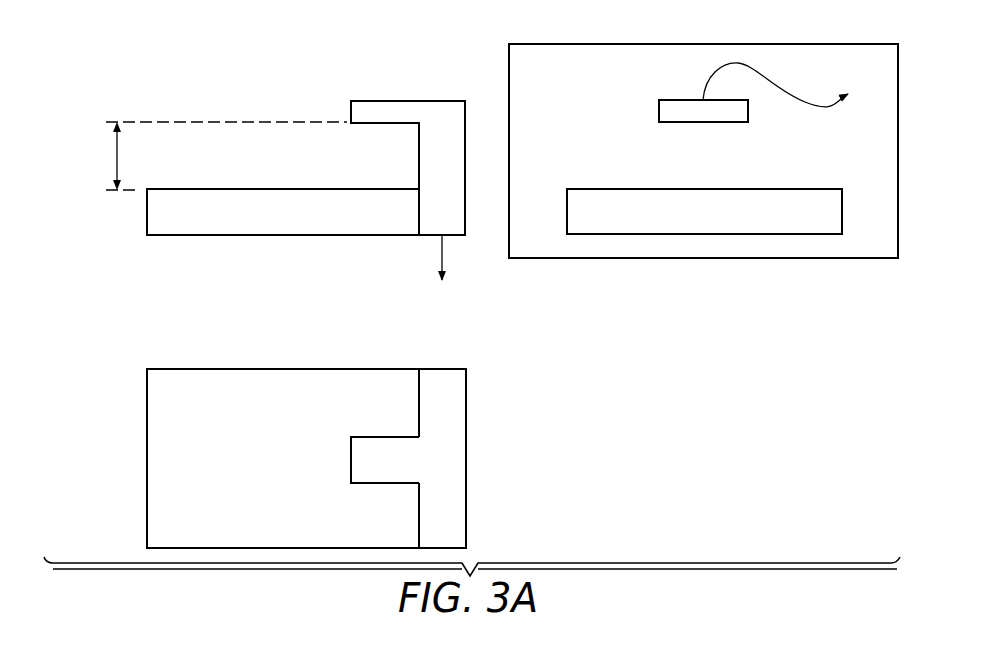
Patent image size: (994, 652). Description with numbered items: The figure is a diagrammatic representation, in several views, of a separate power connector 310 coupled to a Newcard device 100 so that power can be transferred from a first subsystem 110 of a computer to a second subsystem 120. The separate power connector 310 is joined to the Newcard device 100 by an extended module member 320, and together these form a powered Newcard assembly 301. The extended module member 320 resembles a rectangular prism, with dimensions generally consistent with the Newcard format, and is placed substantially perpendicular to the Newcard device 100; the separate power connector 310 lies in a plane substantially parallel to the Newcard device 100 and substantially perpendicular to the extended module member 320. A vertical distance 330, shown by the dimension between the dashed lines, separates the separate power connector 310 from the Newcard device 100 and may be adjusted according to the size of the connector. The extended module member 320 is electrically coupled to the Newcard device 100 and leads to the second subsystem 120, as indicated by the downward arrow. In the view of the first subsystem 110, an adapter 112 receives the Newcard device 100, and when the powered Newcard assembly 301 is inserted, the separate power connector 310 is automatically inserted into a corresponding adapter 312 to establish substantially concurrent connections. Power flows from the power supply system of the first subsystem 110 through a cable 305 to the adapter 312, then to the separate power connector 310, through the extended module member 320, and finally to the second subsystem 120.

The Newcard device 100 is at (145, 212).
The first subsystem 110 is at (785, 259).
The adapter 112 is at (623, 189).
The second subsystem 120 is at (442, 272).
The powered Newcard assembly 301 is at (190, 93).
The cable 305 is at (803, 102).
The separate power connector 310 is at (350, 112).
The adapter 312 is at (659, 110).
The extended module member 320 is at (419, 162).
The vertical distance 330 is at (113, 154).